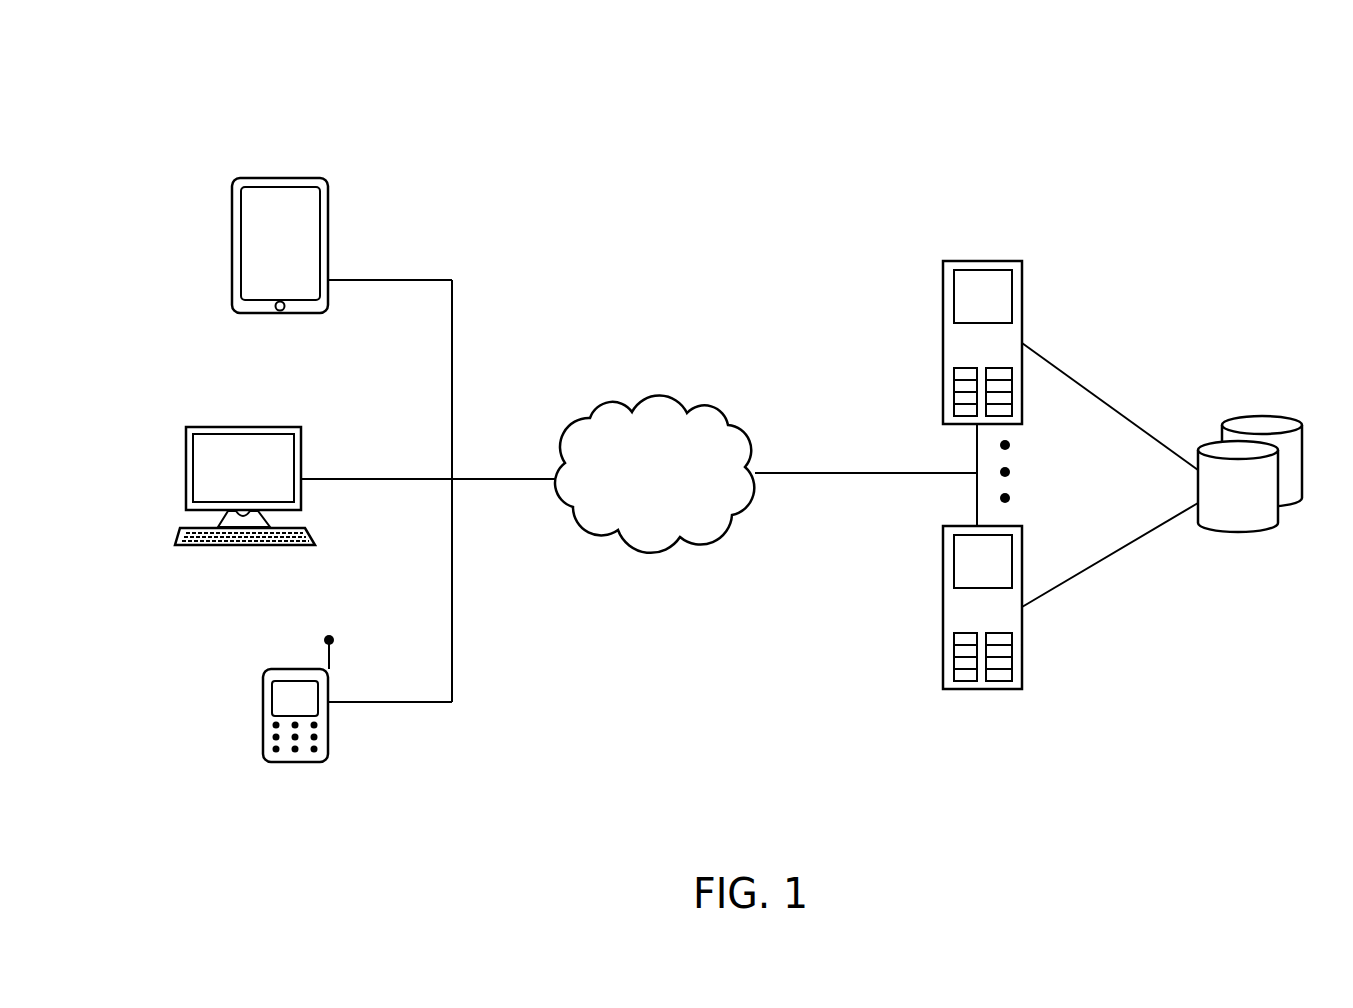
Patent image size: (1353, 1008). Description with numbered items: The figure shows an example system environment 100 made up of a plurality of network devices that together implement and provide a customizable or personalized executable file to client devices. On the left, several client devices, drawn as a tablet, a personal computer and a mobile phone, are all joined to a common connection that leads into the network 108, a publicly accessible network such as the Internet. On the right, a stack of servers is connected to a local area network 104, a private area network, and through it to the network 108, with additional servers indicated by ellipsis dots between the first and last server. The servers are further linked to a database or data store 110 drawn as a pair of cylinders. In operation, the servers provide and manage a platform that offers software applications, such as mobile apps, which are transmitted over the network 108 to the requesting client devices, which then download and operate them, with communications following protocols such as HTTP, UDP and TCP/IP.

The system environment 100 is at (772, 44).
The local area network 104 is at (820, 472).
The network 108 is at (678, 497).
The database 110 is at (1257, 502).